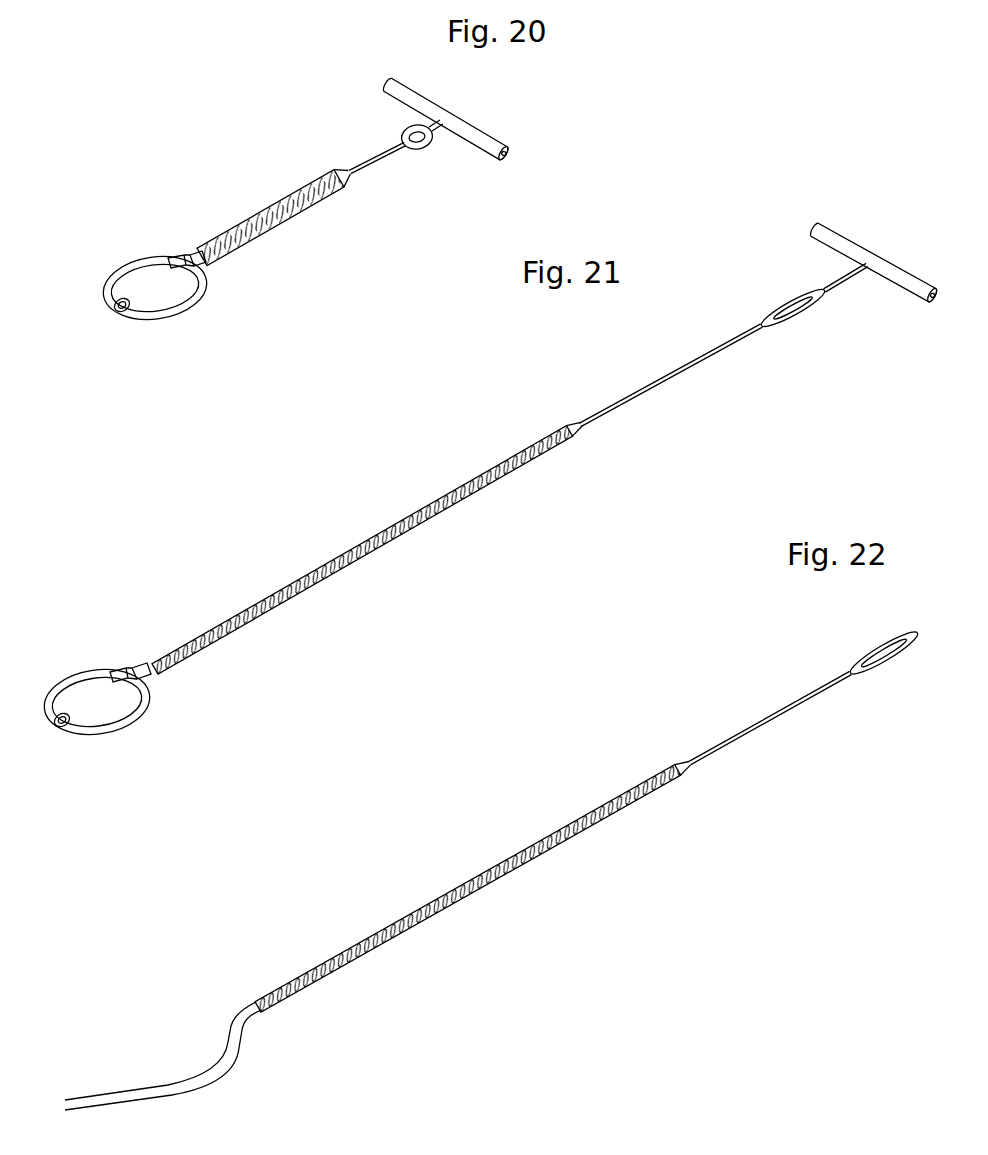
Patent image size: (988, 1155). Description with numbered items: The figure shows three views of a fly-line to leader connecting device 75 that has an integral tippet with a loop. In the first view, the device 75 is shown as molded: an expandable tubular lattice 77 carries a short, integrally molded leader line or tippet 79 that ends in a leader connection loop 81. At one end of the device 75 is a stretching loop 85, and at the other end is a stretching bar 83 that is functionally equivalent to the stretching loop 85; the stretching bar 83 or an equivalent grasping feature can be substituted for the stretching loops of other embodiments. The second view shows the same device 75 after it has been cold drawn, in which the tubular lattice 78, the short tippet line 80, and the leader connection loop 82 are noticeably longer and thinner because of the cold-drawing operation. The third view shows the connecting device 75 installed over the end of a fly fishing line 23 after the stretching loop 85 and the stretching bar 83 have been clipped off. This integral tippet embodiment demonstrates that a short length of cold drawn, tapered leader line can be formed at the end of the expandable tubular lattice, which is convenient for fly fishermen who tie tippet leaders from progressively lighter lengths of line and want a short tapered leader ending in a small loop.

In FIG. 22, the fly fishing line 23 is at (240, 1072).
In FIG. 20, the fly-line connecting device 75 is at (275, 185).
In FIG. 21, the fly-line connecting device 75 is at (485, 455).
In FIG. 22, the fly-line connecting device 75 is at (572, 793).
In FIG. 20, the expandable tubular lattice 77 is at (272, 232).
In FIG. 21, the tubular lattice 78 is at (445, 512).
In FIG. 22, the tubular lattice 78 is at (535, 858).
In FIG. 20, the leader line or tippet 79 is at (370, 173).
In FIG. 21, the short tippet line 80 is at (637, 398).
In FIG. 22, the short tippet line 80 is at (717, 757).
In FIG. 20, the leader connection loop 81 is at (397, 128).
In FIG. 21, the leader connection loop 82 is at (795, 317).
In FIG. 22, the leader connection loop 82 is at (875, 647).
In FIG. 20, the stretching bar 83 is at (480, 123).
In FIG. 21, the stretching bar 83 is at (843, 230).
In FIG. 20, the stretching loop 85 is at (153, 320).
In FIG. 21, the stretching loop 85 is at (128, 727).